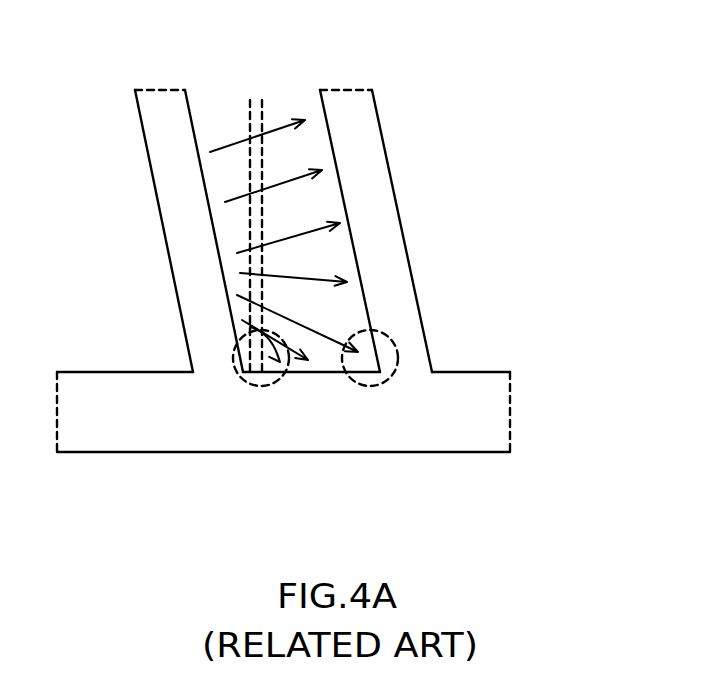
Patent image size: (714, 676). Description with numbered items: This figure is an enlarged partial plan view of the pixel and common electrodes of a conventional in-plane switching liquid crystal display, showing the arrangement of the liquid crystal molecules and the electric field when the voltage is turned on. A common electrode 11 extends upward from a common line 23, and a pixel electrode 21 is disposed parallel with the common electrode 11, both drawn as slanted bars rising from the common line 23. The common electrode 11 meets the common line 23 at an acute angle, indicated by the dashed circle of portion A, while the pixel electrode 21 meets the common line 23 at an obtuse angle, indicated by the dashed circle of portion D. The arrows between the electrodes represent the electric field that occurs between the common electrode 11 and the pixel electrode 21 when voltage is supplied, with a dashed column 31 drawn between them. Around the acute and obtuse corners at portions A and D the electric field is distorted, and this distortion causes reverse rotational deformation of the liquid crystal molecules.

The common electrode 11 is at (383, 200).
The pixel electrode 21 is at (180, 238).
The common line 23 is at (492, 417).
The light beam (emitted light) 31 is at (255, 100).
The portion D is at (260, 386).
The portion A is at (375, 386).